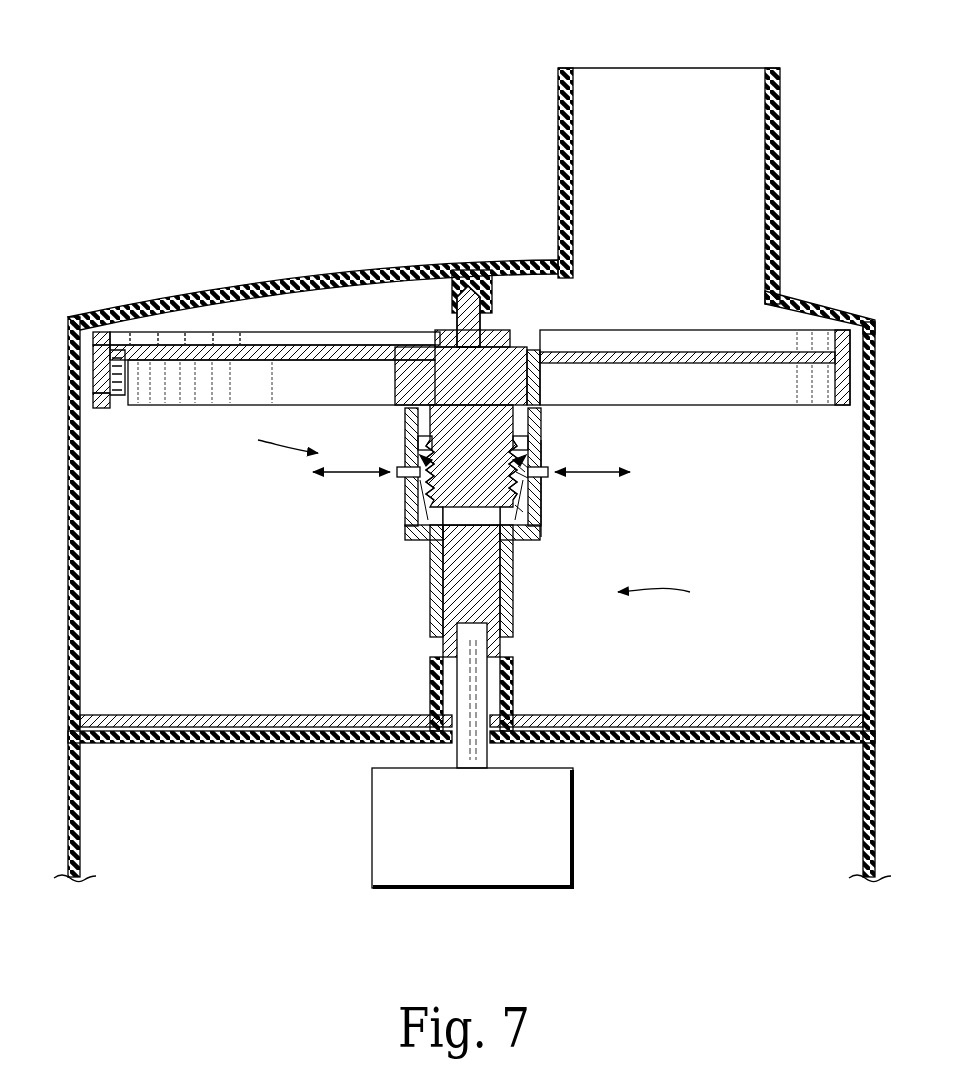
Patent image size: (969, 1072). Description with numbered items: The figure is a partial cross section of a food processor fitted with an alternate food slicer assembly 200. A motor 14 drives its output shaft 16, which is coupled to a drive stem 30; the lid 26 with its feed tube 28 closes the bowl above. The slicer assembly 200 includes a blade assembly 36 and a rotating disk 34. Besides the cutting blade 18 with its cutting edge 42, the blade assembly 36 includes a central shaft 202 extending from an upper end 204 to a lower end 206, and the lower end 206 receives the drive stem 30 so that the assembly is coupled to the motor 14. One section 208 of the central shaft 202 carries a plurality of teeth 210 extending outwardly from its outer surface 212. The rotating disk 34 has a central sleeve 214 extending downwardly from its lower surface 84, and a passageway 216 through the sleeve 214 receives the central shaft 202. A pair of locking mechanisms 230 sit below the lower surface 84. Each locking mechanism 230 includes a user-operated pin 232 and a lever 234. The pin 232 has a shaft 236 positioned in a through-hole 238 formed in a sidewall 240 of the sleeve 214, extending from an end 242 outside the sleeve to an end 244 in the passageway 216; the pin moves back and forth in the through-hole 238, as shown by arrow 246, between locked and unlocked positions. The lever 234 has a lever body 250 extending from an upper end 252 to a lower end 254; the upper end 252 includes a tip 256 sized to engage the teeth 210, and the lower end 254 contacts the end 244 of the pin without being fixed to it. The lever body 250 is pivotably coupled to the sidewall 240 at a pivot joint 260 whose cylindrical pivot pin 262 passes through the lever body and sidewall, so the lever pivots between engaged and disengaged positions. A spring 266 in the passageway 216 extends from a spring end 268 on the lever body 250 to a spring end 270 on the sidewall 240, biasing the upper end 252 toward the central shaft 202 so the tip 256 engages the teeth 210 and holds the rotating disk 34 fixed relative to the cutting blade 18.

The food slicer assembly 200 is at (395, 110).
The lid 26 is at (215, 285).
The feed tube 28 is at (782, 145).
The cutting blade 18 is at (225, 345).
The blade assembly 36 is at (170, 345).
The cutting edge 42 is at (275, 347).
The rotating disk 34 is at (680, 340).
The lower surface 84 is at (690, 364).
The central sleeve 214 is at (545, 372).
The central shaft 202 is at (525, 350).
The upper end 204 is at (492, 337).
The sidewall 240 is at (540, 357).
The tip 256 is at (471, 465).
The lever 234 is at (520, 462).
The teeth 210 is at (513, 483).
The passageway 216 is at (432, 548).
The lower end 206 is at (432, 626).
The section 208 is at (513, 560).
The lever body 250 is at (516, 542).
The outer surface 212 is at (420, 535).
The shaft 236 is at (402, 478).
The through-hole 238 is at (536, 490).
The lower end 254 is at (540, 528).
The end 242 is at (397, 476).
The user-operated pin 232 is at (548, 474).
The end 244 is at (420, 466).
The upper end 252 is at (526, 456).
The pivot pin 262 is at (420, 505).
The pivot joint 260 is at (519, 508).
The spring 266 is at (530, 460).
The spring end 268 is at (528, 462).
The spring end 270 is at (540, 470).
The arrow 246 is at (330, 476).
The locking mechanism 230 is at (479, 516).
The drive stem 30 is at (515, 648).
The output shaft 16 is at (483, 752).
The motor 14 is at (567, 862).